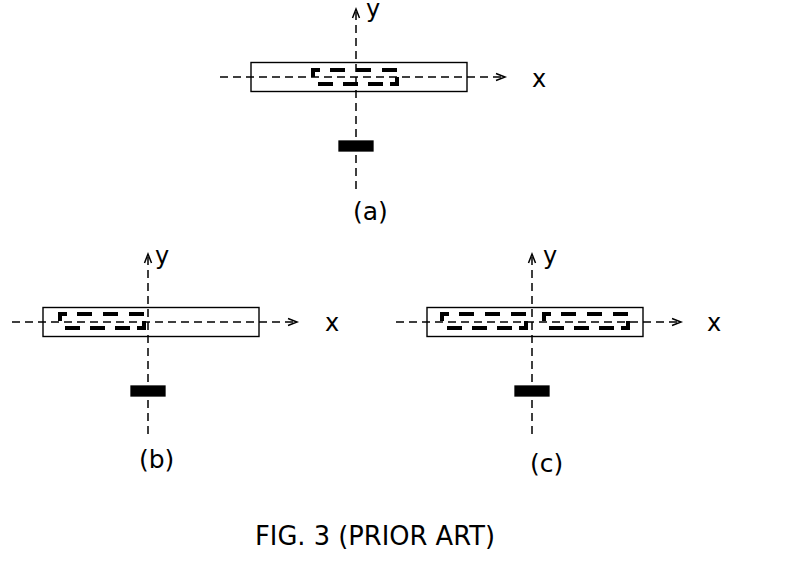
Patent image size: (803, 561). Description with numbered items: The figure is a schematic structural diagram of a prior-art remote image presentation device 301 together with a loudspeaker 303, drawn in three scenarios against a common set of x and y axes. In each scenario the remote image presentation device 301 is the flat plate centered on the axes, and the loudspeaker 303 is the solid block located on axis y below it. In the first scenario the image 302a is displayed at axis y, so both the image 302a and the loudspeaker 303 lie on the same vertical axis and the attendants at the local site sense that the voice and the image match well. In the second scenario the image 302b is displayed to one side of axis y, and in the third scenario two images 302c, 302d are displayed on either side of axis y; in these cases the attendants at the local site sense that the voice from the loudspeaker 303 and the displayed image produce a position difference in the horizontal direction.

The remote image presentation device 301 is at (437, 63).
The image 302a is at (347, 69).
The image 302b is at (95, 313).
The image 302c is at (495, 313).
The image 302d is at (608, 330).
The loudspeaker 303 is at (377, 143).